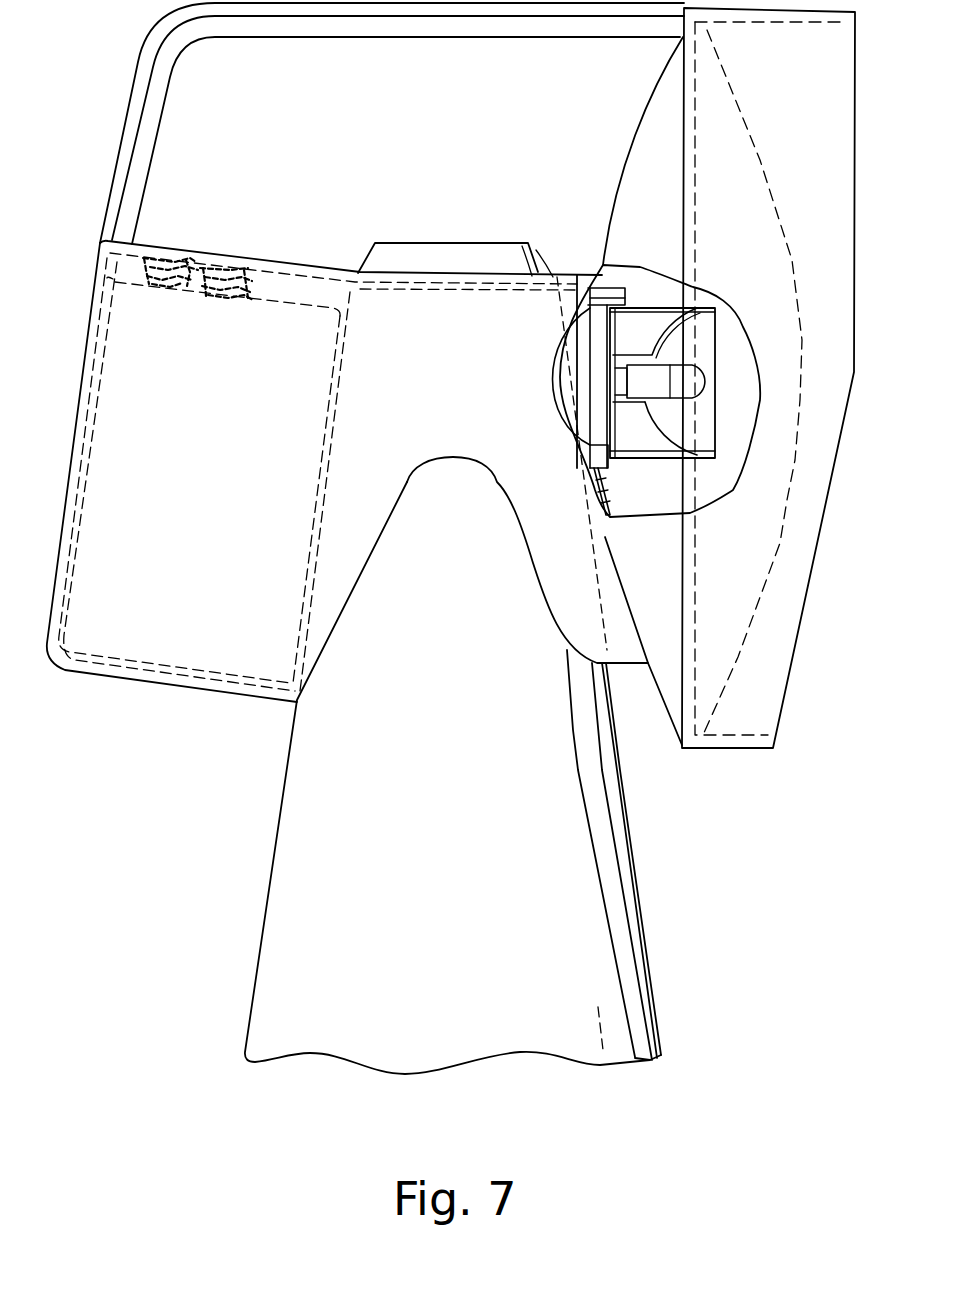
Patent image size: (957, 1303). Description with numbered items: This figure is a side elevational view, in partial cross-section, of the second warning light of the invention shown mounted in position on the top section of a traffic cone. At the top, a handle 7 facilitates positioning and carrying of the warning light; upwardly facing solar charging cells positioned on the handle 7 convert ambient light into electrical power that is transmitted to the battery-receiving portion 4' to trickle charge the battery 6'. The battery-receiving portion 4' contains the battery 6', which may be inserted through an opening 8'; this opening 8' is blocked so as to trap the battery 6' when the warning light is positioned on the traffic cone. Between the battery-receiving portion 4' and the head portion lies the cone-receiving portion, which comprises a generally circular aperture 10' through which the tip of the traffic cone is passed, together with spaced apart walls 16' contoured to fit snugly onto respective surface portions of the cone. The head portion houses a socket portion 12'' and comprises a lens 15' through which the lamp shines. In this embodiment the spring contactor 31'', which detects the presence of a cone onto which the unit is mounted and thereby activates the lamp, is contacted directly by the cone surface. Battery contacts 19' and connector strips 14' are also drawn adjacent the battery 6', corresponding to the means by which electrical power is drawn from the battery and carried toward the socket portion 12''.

The handle 7 is at (133, 115).
The battery receiving portion 4' is at (172, 488).
The battery 6' is at (326, 466).
The fastener 19' is at (123, 247).
The fastener 14' is at (226, 233).
The circular aperture 10' is at (455, 221).
The opening 8' is at (447, 778).
The spaced apart walls 16' is at (544, 667).
The spring contactor 31'' is at (562, 401).
The socket portion 12'' is at (732, 391).
The lens 15' is at (775, 378).